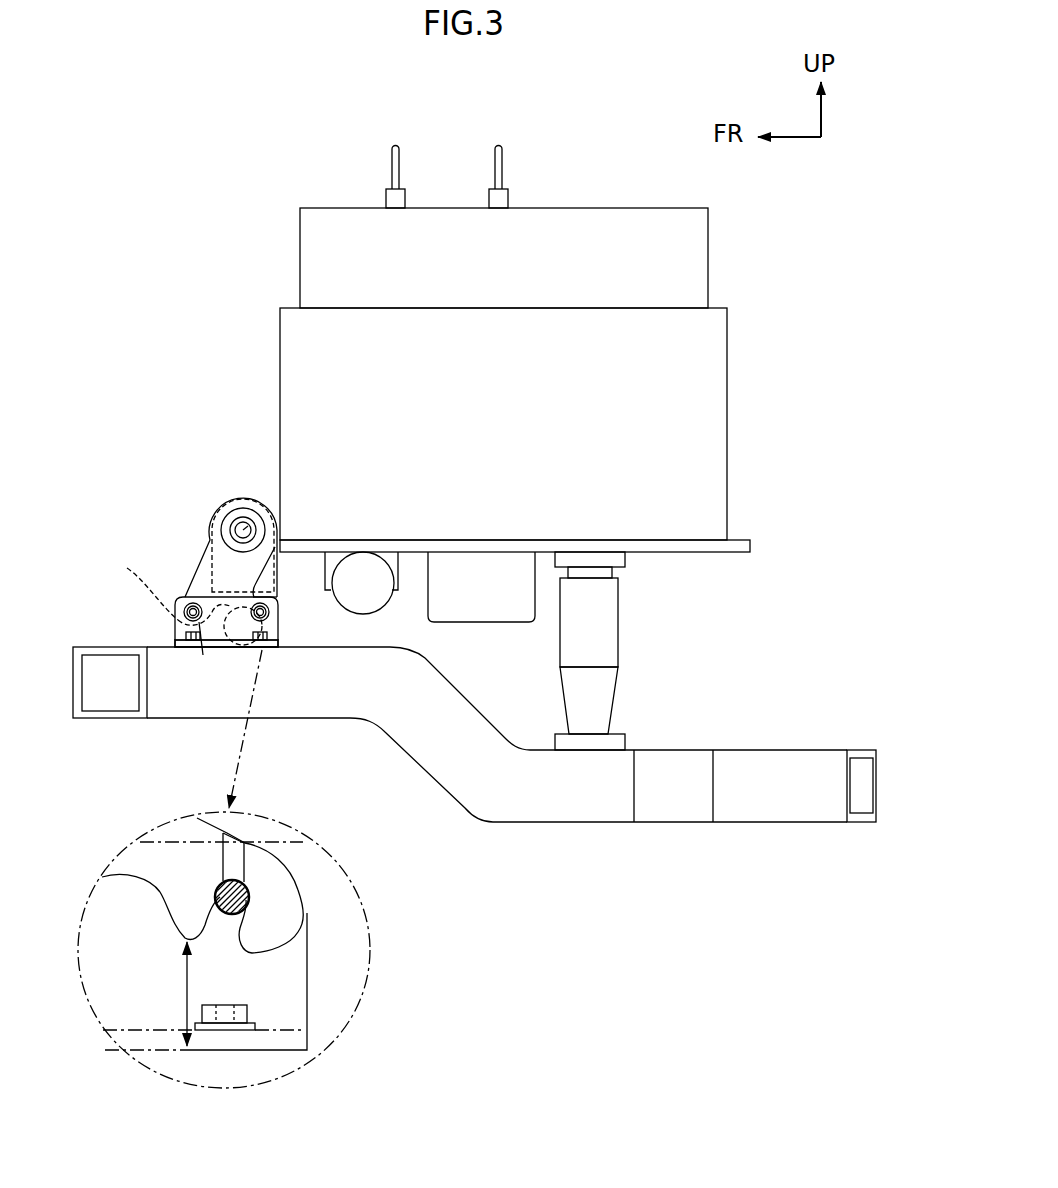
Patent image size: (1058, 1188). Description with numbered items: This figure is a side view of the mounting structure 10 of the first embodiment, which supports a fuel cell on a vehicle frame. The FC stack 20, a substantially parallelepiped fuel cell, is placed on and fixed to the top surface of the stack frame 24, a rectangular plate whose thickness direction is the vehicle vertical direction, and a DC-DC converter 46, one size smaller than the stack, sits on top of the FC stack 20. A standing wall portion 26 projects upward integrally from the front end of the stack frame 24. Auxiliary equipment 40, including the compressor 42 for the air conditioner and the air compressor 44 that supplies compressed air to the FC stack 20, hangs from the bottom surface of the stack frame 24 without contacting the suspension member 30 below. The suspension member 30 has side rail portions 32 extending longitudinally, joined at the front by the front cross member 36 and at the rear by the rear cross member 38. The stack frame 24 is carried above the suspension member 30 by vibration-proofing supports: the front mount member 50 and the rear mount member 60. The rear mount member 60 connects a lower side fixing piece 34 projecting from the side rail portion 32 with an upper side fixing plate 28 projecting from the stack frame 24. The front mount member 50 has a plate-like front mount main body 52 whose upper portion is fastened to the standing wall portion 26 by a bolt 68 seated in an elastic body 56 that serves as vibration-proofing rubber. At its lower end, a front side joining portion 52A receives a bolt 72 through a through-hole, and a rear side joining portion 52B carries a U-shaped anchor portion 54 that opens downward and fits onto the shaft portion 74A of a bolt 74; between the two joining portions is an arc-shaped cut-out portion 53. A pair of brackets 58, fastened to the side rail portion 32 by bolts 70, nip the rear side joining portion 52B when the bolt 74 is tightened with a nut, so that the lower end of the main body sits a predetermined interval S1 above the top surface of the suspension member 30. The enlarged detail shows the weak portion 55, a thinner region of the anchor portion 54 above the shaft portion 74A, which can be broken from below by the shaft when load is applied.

The mounting structure 10 is at (253, 747).
The FC stack 20 is at (568, 349).
The stack frame 24 is at (754, 536).
The standing wall portion 26 is at (279, 573).
The upper side fixing plate 28 is at (620, 566).
The suspension member 30 is at (474, 770).
The side rail portion 32 is at (595, 803).
The lower side fixing piece 34 is at (617, 740).
The front cross member 36 is at (108, 718).
The rear cross member 38 is at (868, 822).
The auxiliary equipment 40 is at (439, 631).
The compressor 42 is at (363, 598).
The air compressor 44 is at (435, 610).
The DC-DC converter 46 is at (697, 258).
The front mount member 50 is at (255, 747).
The front mount main body 52 is at (253, 692).
The front side joining portion 52A is at (155, 589).
The rear side joining portion 52B is at (275, 640).
The cut-out portion 53 is at (135, 885).
The anchor portion 54 is at (167, 927).
The weak portion 55 is at (233, 853).
The elastic body 56 is at (246, 518).
The bracket 58 is at (176, 626).
The rear mount member 60 is at (649, 651).
The bolt 68 is at (237, 522).
The bolt 70 is at (189, 640).
The bolt 72 is at (203, 651).
The bolt 74 is at (244, 801).
The shaft portion 74A is at (220, 915).
The predetermined interval S1 is at (185, 993).